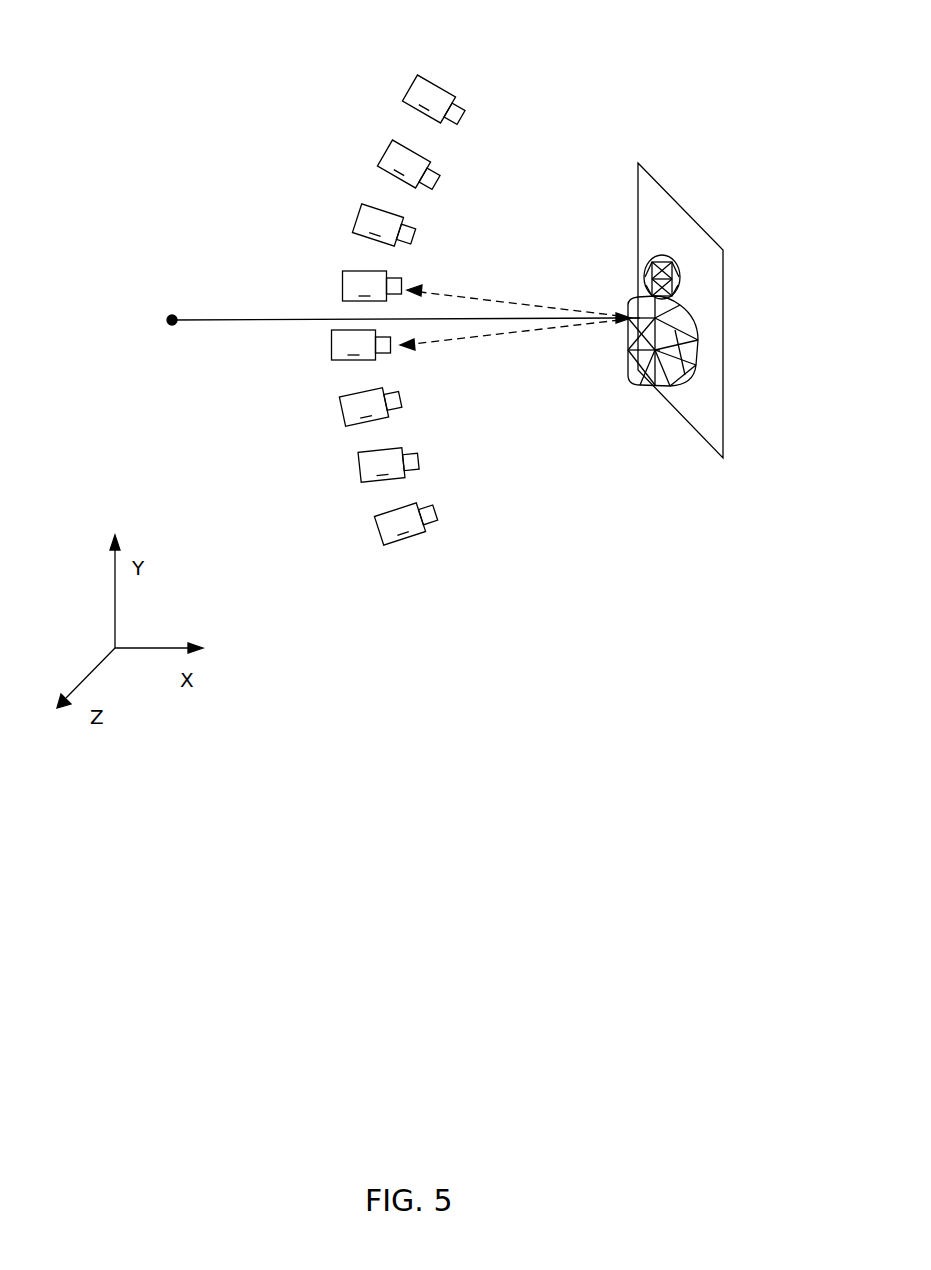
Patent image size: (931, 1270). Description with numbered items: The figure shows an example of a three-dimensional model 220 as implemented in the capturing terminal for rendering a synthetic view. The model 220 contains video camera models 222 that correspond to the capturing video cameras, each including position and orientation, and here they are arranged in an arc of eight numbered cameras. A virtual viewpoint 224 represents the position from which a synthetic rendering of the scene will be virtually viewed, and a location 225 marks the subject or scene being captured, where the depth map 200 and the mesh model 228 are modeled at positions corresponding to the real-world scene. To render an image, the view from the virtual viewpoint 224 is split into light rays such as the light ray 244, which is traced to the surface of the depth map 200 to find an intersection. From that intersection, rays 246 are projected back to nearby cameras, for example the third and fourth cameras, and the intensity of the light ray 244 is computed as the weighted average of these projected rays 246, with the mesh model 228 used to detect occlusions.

The depth map 200 is at (680, 342).
The model 220 is at (375, 296).
The video camera models 222 is at (477, 88).
The virtual viewpoint 224 is at (119, 309).
The location 225 is at (601, 272).
The mesh model 228 is at (632, 343).
The light ray 244 is at (401, 288).
The ray 246 is at (510, 368).